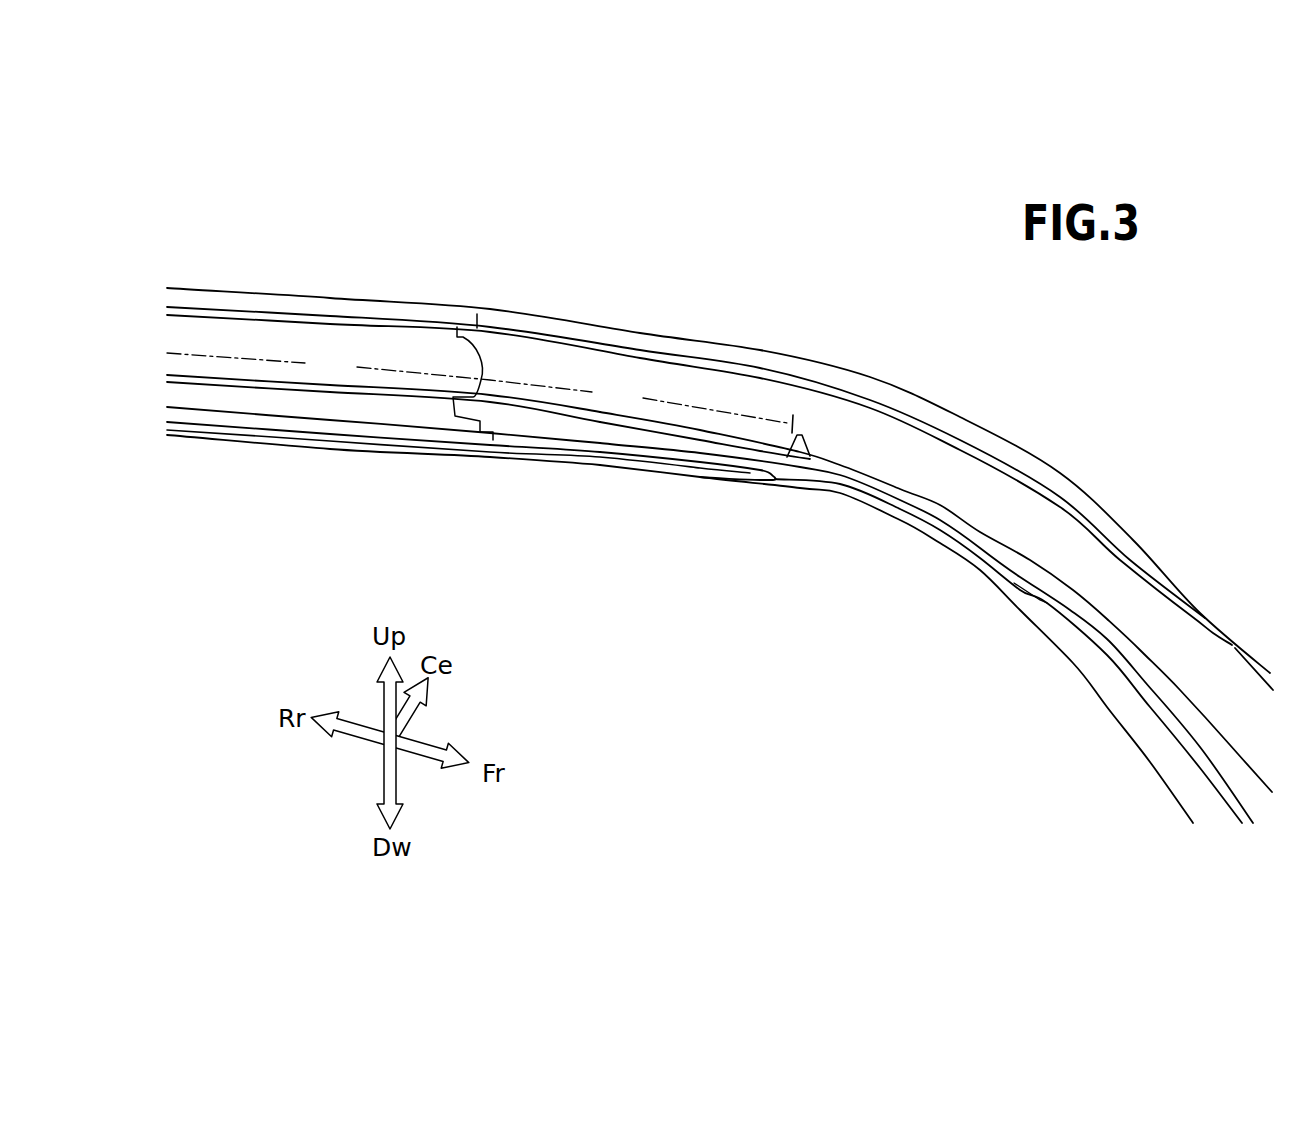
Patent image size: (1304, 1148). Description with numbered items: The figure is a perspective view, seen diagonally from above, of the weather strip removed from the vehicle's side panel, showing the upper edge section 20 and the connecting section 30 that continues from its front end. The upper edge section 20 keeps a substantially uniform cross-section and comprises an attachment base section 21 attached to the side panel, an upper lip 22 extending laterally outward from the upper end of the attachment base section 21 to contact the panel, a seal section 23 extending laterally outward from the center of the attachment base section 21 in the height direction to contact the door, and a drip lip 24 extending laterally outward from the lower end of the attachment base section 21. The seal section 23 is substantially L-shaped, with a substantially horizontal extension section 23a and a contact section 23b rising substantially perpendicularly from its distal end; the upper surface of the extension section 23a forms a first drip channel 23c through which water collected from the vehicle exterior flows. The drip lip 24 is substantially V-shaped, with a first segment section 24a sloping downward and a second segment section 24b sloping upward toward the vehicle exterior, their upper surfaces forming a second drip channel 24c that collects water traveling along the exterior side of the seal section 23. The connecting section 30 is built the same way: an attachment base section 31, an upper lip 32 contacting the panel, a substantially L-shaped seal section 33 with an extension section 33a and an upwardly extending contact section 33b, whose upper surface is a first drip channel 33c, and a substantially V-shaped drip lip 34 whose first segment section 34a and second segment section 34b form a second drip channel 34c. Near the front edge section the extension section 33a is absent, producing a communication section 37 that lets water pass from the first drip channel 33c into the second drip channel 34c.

The upper edge section 20 is at (718, 411).
The attachment base section 21 is at (230, 339).
The upper lip 22 is at (253, 312).
The seal section 23 is at (383, 463).
The extension section 23a is at (209, 364).
The contact section 23b is at (252, 402).
The first drip channel 23c is at (353, 374).
The drip lip 24 is at (458, 413).
The first segment section 24a is at (331, 427).
The second segment section 24b is at (390, 450).
The second drip channel 24c is at (418, 428).
The connecting section 30 is at (720, 500).
The attachment base section 31 is at (547, 366).
The upper lip 32 is at (588, 333).
The seal section 33 is at (868, 583).
The extension section 33a is at (561, 396).
The contact section 33b is at (522, 423).
The first drip channel 33c is at (640, 402).
The drip lip 34 is at (866, 530).
The first segment section 34a is at (591, 451).
The second segment section 34b is at (670, 473).
The second drip channel 34c is at (502, 431).
The communication section 37 is at (833, 457).